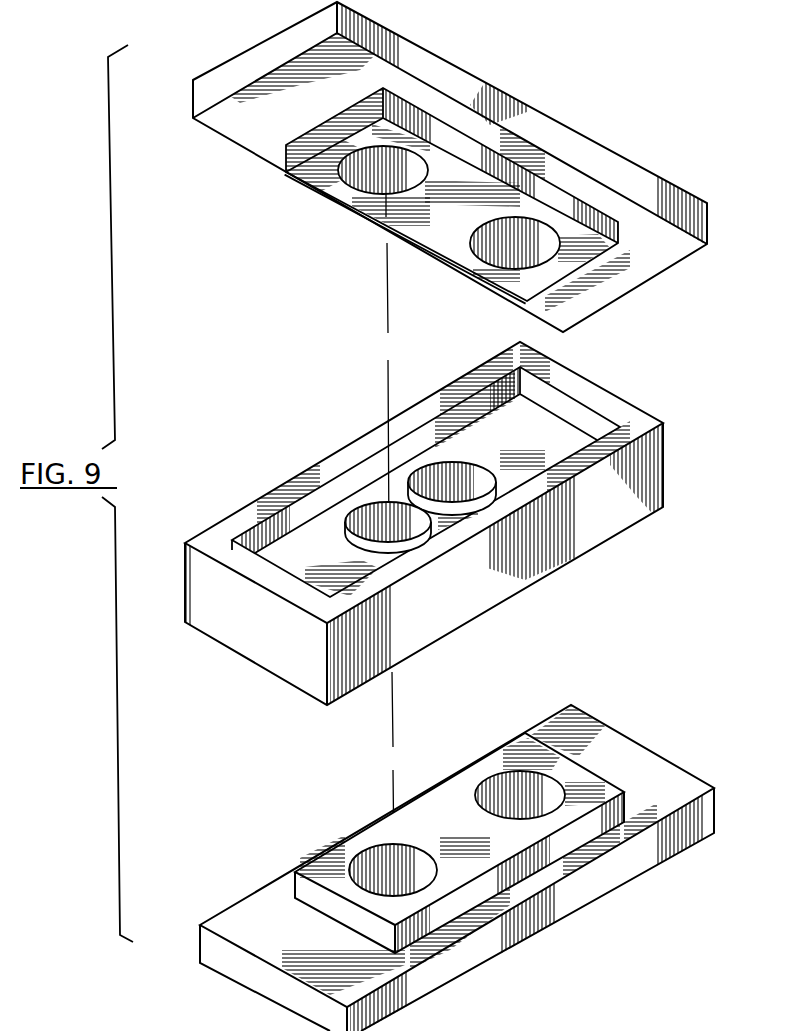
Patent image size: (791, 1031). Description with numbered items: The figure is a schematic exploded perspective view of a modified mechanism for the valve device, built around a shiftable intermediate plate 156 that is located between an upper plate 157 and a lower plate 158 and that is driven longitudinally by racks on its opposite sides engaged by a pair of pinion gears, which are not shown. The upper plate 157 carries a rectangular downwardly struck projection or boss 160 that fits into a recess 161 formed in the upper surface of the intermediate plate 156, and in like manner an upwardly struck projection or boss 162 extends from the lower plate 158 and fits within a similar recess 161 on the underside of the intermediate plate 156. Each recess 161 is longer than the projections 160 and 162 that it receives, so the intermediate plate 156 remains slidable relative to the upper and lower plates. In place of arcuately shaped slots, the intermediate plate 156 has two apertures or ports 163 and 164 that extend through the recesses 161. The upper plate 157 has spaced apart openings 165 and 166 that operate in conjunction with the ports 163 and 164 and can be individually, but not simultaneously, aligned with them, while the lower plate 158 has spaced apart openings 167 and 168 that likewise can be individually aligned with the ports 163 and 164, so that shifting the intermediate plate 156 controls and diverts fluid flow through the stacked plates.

The intermediate plate 156 is at (357, 437).
The upper plate 157 is at (548, 97).
The lower plate 158 is at (328, 837).
The downwardly struck projection or boss 160 is at (427, 222).
The recess 161 is at (560, 427).
The upwardly struck projection or boss 162 is at (450, 807).
The port 163 is at (412, 522).
The port 164 is at (477, 483).
The opening 165 is at (360, 182).
The opening 166 is at (493, 255).
The opening 167 is at (382, 850).
The opening 168 is at (490, 787).